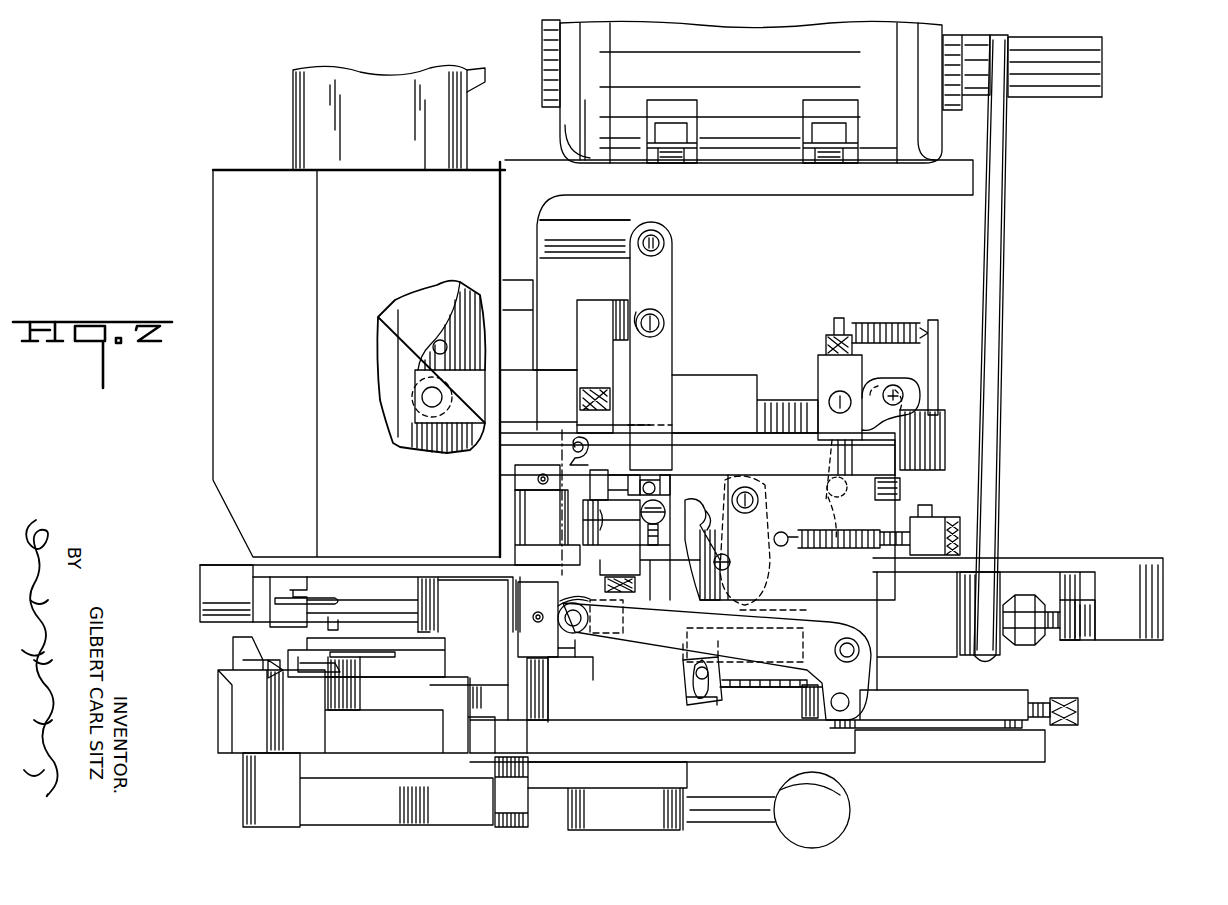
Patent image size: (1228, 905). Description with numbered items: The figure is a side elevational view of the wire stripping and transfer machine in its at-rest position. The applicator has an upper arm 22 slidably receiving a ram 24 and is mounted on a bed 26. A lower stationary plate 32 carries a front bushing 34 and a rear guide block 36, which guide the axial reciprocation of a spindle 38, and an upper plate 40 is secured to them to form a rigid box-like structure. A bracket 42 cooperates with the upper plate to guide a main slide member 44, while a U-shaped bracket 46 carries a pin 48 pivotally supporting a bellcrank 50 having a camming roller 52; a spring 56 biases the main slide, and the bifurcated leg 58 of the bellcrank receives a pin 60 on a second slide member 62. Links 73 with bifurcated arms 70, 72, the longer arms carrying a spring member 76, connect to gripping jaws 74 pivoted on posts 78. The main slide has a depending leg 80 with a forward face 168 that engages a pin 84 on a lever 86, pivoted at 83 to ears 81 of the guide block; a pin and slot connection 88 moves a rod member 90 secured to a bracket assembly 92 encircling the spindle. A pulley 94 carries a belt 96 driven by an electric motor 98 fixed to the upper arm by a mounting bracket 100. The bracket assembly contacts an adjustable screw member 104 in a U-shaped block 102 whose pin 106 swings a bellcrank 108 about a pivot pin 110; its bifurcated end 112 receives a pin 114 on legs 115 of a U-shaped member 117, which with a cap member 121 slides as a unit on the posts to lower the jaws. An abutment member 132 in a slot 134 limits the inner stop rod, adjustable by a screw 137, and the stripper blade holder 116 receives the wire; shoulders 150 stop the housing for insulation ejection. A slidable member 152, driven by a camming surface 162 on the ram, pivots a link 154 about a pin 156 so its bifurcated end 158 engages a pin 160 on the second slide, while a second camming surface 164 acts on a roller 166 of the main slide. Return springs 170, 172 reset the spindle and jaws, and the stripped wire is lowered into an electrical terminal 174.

The upper arm 22 is at (218, 215).
The ram 24 is at (380, 96).
The bed 26 is at (243, 828).
The lower stationary plate 32 is at (905, 752).
The front bushing 34 is at (466, 634).
The rear guide block 36 is at (805, 706).
The spindle 38 is at (372, 592).
The upper plate 40 is at (696, 445).
The bracket 42 is at (577, 346).
The main slide member 44 is at (545, 406).
The U-shaped bracket 46 is at (818, 362).
The pin 48 is at (829, 400).
The bellcrank 50 is at (875, 378).
The camming roller 52 is at (903, 392).
The spring 56 is at (875, 318).
The bifurcated leg 58 is at (827, 490).
The pin 60 is at (828, 508).
The second slide member 62 is at (900, 488).
The bifurcated arm 70 is at (628, 515).
The bifurcated arm 72 is at (660, 533).
The link 73 is at (530, 516).
The gripping jaws 74 is at (200, 583).
The spring member 76 is at (652, 528).
The posts 78 is at (526, 707).
The depending leg portion 80 is at (672, 540).
The ears 81 is at (775, 478).
The pivot 83 is at (746, 506).
The pin 84 is at (732, 562).
The lever 86 is at (678, 665).
The pin and slot connection 88 is at (698, 682).
The rod member 90 is at (805, 672).
The bracket assembly 92 is at (1100, 545).
The pulley 94 is at (1000, 648).
The belt 96 is at (996, 478).
The electric motor 98 is at (560, 44).
The mounting bracket 100 is at (838, 195).
The U-shaped block 102 is at (1020, 698).
The adjustable screw member 104 is at (1078, 713).
The pin 106 is at (850, 702).
The bellcrank 108 is at (798, 640).
The pivot pin 110 is at (857, 644).
The bifurcated end 112 is at (588, 616).
The pin 114 is at (538, 619).
The legs 115 is at (578, 650).
The stripper blade holder 116 is at (265, 592).
The U-shaped member 117 is at (572, 654).
The cap member 121 is at (522, 476).
The abutment member 132 is at (1088, 600).
The slot 134 is at (1086, 640).
The screw 137 is at (962, 532).
The shoulders 150 is at (334, 635).
The slidable member 152 is at (597, 246).
The link 154 is at (665, 286).
The pin 156 is at (664, 324).
The bifurcated end 158 is at (629, 476).
The pin 160 is at (655, 480).
The camming surface 162 is at (470, 90).
The camming surface 164 is at (440, 340).
The roller 166 is at (415, 393).
The forward face 168 is at (637, 579).
The return spring 170 is at (848, 545).
The return spring 172 is at (570, 455).
The electrical terminal 174 is at (295, 675).